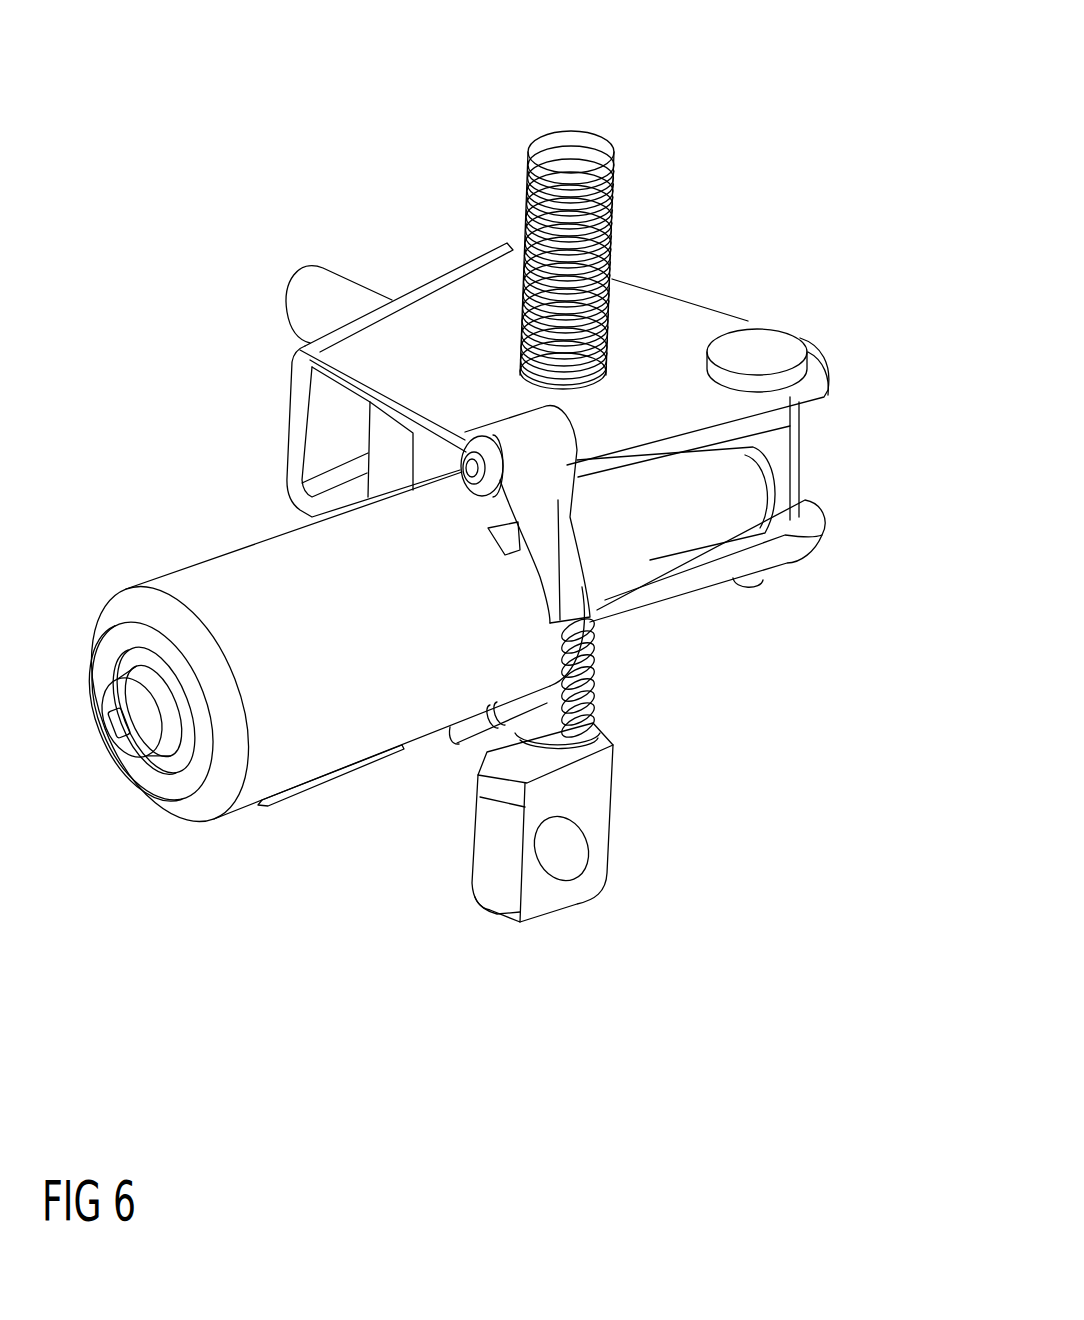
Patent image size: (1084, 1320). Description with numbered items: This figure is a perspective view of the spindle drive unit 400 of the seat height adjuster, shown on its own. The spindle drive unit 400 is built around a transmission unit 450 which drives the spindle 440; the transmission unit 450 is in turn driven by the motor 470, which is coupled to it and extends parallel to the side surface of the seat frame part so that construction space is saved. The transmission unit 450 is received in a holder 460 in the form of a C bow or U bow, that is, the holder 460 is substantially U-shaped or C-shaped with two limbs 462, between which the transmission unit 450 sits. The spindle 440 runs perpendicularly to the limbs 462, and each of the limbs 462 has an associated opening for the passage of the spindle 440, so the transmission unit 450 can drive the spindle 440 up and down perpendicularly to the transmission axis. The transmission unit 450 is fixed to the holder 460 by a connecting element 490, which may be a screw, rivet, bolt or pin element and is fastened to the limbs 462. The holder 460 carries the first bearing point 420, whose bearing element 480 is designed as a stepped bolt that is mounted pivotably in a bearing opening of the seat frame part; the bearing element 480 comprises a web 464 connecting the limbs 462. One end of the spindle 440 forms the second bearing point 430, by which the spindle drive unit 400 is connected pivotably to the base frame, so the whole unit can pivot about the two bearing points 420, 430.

The spindle drive unit 400 is at (770, 114).
The first bearing point 420 is at (390, 265).
The second bearing point 430 is at (631, 828).
The spindle 440 is at (608, 200).
The transmission unit 450 is at (831, 459).
The holder 460 is at (826, 578).
The limbs 462 is at (470, 320).
The web 464 is at (302, 430).
The motor 470 is at (262, 722).
The bearing element 480 is at (310, 280).
The connecting element 490 is at (791, 369).